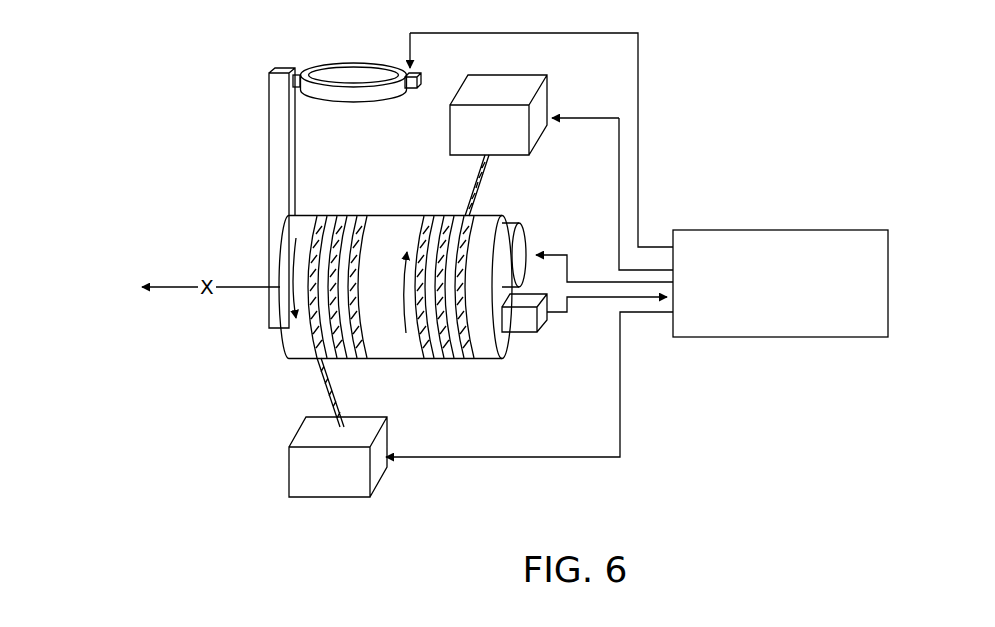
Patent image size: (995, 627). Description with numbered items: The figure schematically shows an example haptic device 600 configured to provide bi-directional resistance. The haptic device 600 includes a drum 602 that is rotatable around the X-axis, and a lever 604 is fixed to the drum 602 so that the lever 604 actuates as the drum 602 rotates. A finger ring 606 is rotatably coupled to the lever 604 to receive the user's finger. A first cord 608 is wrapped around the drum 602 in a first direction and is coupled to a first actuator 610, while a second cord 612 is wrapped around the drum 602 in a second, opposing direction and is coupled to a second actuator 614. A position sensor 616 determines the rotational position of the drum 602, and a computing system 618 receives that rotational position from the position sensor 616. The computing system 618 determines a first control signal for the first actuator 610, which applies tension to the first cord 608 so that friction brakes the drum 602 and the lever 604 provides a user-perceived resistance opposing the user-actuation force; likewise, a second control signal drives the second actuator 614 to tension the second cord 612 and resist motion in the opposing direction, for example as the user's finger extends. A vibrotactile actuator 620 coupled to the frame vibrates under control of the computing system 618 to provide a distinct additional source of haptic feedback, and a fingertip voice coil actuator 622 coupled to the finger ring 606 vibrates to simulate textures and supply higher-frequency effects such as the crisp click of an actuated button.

The haptic device 600 is at (774, 72).
The drum 602 is at (283, 348).
The lever 604 is at (268, 178).
The finger ring 606 is at (345, 62).
The first cord 608 is at (326, 386).
The first actuator 610 is at (289, 470).
The second cord 612 is at (473, 190).
The second actuator 614 is at (450, 130).
The position sensor 616 is at (520, 334).
The computing system 618 is at (780, 283).
The vibrotactile actuator 620 is at (520, 222).
The fingertip voice coil actuator 622 is at (404, 90).